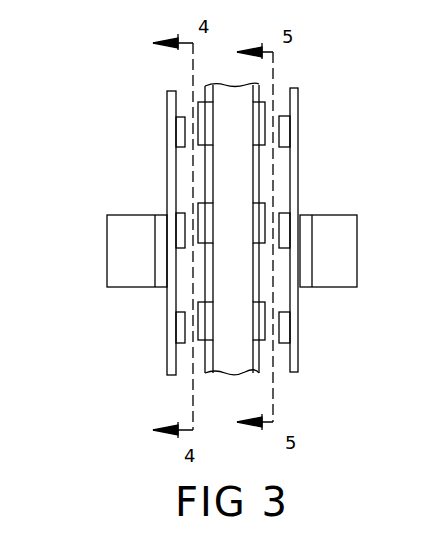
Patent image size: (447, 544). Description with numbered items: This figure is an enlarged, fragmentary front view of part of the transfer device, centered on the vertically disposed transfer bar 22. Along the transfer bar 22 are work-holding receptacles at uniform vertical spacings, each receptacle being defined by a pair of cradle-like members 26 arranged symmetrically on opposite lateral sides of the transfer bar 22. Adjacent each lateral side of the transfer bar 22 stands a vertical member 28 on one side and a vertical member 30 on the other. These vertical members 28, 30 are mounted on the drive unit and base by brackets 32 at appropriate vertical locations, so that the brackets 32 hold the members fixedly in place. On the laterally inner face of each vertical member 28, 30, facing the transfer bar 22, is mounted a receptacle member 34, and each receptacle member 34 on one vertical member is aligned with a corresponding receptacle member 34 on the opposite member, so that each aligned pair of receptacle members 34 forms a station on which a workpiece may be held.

The transfer bar 22 is at (234, 373).
The cradle-like members 26 is at (204, 148).
The vertical member 28 is at (170, 91).
The vertical member 30 is at (299, 92).
The brackets 32 is at (113, 252).
The receptacle member 34 is at (180, 131).